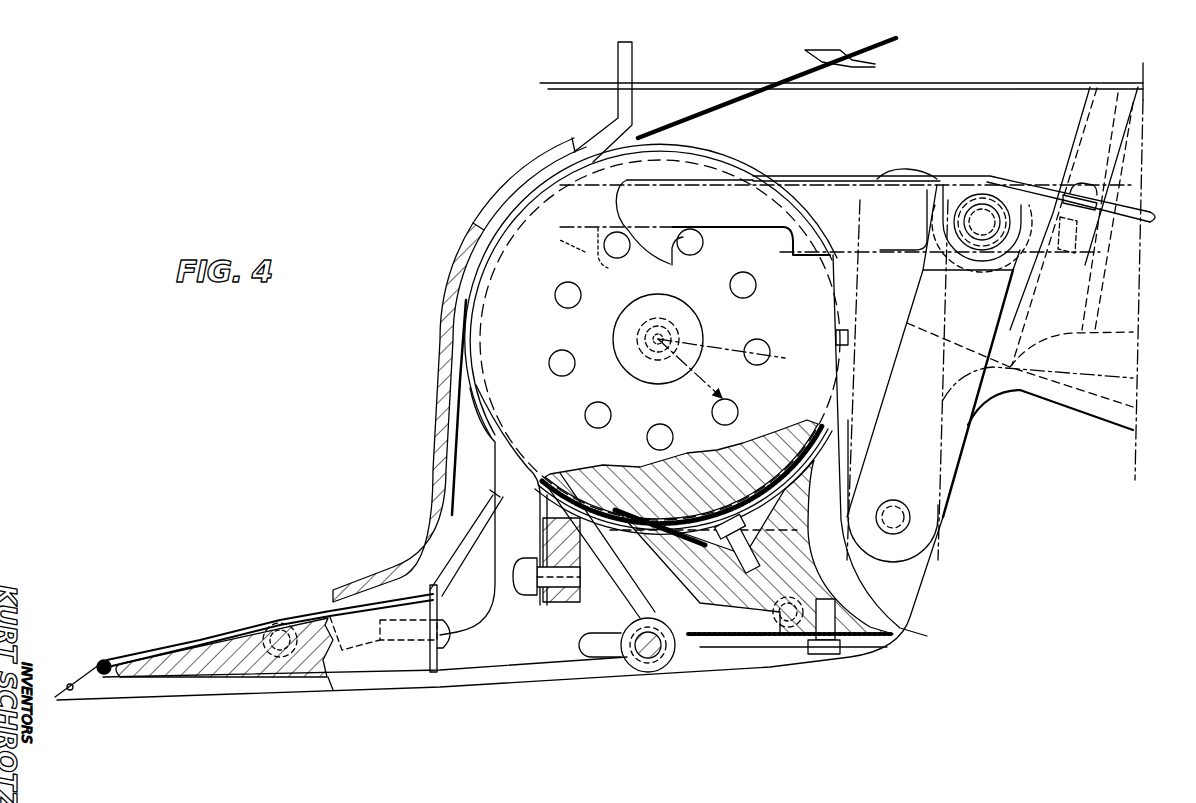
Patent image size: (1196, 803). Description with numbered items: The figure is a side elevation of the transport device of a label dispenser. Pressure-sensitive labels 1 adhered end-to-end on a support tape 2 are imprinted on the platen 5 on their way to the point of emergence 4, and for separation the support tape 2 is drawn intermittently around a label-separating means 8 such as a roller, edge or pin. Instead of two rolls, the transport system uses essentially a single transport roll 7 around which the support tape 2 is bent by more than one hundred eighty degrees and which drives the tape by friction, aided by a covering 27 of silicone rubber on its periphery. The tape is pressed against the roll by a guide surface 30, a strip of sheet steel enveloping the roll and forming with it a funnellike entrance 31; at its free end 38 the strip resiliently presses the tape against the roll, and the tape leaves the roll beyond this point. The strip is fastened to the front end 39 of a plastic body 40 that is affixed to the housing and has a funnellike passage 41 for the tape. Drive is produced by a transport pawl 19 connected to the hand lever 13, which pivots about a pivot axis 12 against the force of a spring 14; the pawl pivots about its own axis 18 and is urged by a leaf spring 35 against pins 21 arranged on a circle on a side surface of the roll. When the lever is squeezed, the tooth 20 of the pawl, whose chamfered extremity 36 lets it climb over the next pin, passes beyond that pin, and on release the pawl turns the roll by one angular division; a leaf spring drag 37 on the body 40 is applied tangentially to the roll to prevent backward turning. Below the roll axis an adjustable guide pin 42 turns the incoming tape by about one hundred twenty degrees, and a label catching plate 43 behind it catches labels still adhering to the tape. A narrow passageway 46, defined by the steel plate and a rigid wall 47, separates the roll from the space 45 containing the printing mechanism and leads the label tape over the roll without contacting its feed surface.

The pressure-sensitive labels 1 is at (70, 663).
The support tape 2 is at (503, 664).
The point of emergence 4 is at (92, 646).
The platen 5 is at (195, 665).
The transport roll 7 is at (470, 268).
The label-separating means 8 is at (104, 677).
The pivot axis 12 is at (910, 520).
The hand lever 13 is at (1087, 410).
The spring 14 is at (1133, 210).
The pivot axis of pawl 18 is at (983, 215).
The transport pawl 19 is at (760, 182).
The tooth 20 is at (673, 250).
The pins 21 is at (526, 352).
The covering of silicone rubber 27 is at (595, 492).
The guide surface 30 is at (738, 166).
The funnellike entrance 31 is at (582, 516).
The leaf spring 35 is at (895, 174).
The extremity of tooth 36 is at (633, 232).
The leaf spring drag 37 is at (692, 533).
The free end of guide surface 38 is at (848, 342).
The front end of body 39 is at (543, 542).
The body 40 is at (880, 618).
The funnellike passage 41 is at (663, 588).
The guide pin 42 is at (652, 660).
The label catching plate 43 is at (717, 637).
The space 45 is at (340, 385).
The narrow passageway 46 is at (640, 132).
The rigid wall 47 is at (440, 338).